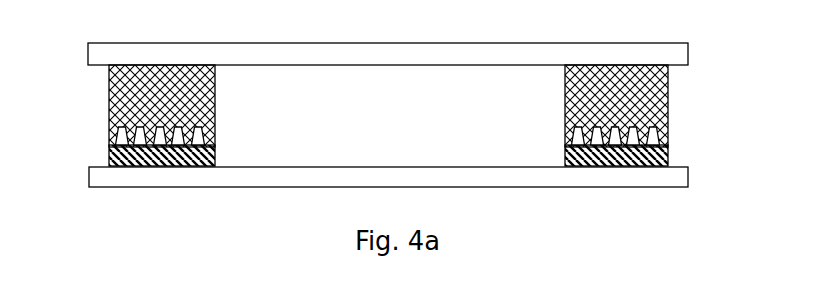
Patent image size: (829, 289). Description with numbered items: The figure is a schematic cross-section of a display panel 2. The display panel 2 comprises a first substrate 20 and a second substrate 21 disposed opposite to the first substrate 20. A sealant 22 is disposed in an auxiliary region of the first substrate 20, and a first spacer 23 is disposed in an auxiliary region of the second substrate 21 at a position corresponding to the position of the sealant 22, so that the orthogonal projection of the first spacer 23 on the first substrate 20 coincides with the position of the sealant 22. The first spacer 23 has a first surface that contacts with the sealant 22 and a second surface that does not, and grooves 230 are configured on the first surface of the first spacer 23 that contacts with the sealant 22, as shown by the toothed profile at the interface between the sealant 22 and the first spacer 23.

The display panel 2 is at (82, 42).
The first substrate 20 is at (670, 55).
The second substrate 21 is at (670, 179).
The sealant 22 is at (668, 105).
The first spacer 23 is at (427, 89).
The grooves 230 is at (605, 143).